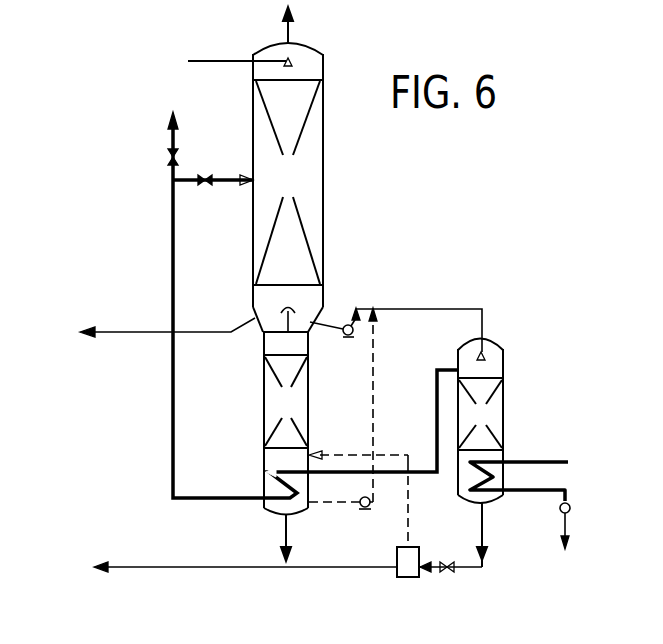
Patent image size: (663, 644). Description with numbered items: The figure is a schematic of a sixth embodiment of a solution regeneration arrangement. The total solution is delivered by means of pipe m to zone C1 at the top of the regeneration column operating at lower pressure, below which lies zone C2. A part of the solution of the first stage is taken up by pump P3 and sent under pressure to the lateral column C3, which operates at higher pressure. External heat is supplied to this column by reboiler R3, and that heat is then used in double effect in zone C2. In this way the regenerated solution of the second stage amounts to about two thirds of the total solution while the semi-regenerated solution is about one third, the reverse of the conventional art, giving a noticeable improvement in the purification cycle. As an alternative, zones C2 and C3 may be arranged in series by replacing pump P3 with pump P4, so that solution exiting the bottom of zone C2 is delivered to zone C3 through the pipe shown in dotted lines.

The zone C1 is at (288, 169).
The zone C2 is at (286, 446).
The lateral column C3 is at (480, 453).
The pump P3 is at (335, 333).
The pump P4 is at (341, 513).
The reboiler R3 is at (520, 493).
The pipe m is at (237, 49).